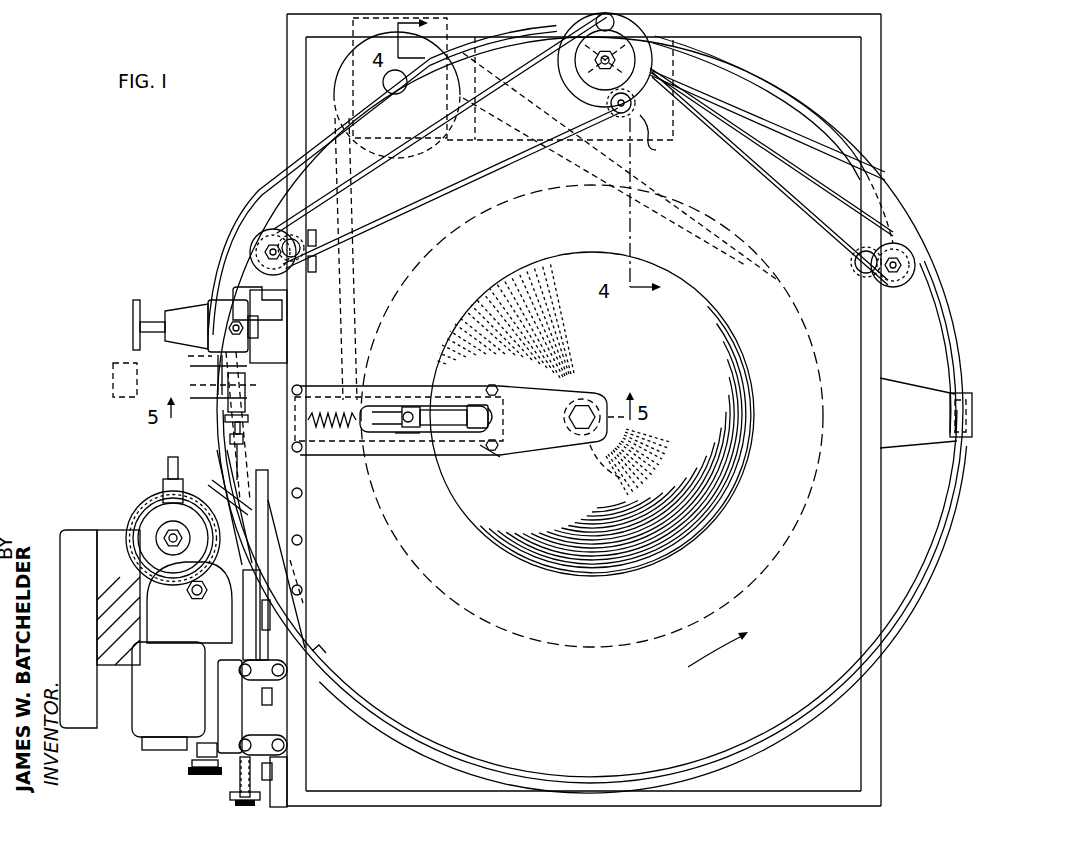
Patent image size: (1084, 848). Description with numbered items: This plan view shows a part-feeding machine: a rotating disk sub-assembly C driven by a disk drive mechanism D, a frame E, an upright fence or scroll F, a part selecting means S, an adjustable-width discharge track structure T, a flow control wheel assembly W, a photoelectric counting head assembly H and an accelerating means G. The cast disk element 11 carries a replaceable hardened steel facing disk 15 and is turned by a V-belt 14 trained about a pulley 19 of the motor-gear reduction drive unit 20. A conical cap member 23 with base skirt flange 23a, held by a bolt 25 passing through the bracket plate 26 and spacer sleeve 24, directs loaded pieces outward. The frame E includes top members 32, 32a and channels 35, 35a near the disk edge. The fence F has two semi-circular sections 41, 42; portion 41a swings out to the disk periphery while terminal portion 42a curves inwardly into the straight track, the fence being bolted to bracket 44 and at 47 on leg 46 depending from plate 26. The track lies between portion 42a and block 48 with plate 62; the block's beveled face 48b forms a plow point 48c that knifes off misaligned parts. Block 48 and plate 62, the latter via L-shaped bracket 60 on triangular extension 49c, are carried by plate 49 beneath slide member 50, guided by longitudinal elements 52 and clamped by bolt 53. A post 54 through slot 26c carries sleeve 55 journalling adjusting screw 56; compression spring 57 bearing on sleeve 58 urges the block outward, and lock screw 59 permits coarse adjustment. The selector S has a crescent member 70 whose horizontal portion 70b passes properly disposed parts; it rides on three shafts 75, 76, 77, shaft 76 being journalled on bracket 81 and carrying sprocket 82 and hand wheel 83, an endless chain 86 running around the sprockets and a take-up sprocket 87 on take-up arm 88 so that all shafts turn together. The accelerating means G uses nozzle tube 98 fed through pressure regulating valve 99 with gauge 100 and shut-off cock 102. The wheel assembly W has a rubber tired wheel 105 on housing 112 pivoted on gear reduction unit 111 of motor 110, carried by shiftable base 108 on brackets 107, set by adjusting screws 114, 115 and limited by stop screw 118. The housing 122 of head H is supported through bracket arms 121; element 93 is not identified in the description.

The main cast disk element 11 is at (925, 523).
The driving V-belt 14 is at (656, 184).
The thin hardened steel disk 15 is at (524, 681).
The pulley 19 is at (333, 95).
The electric motor-gear reduction drive unit 20 is at (485, 118).
The conical cap member 23 is at (470, 516).
The base skirt flange 23a is at (618, 578).
The bracket spacer sleeve 24 is at (591, 452).
The bolt 25 is at (598, 403).
The radially extending bracket plate 26 is at (537, 447).
The second longitudinal slot 26c is at (486, 456).
The horizontal top member 32 is at (306, 743).
The horizontal top member 32a is at (881, 698).
The channel 35 is at (881, 21).
The channel 35a is at (881, 793).
The semi-circular fence section 41 is at (966, 453).
The beginning portion of section 41 41a is at (320, 650).
The semi-circular fence section 42 is at (968, 378).
The terminal portion of fence section 42a is at (195, 368).
The bracket 44 is at (975, 400).
The leg 46 is at (200, 388).
The fence fastening location 47 is at (192, 397).
The vertical plate or block 48 is at (257, 380).
The vertical face 48b is at (240, 385).
The plow point edge 48c is at (212, 356).
The elongated horizontal plate 49 is at (268, 506).
The triangular extension 49c is at (282, 573).
The slide member 50 is at (406, 442).
The longitudinal elements 52 is at (398, 390).
The bolt 53 is at (337, 440).
The vertical post structure 54 is at (416, 406).
The sleeve 55 is at (445, 408).
The knurled headed adjusting screw 56 is at (478, 402).
The helical compression spring 57 is at (350, 440).
The sleeve 58 is at (387, 448).
The lock screw 59 is at (408, 404).
The L-shaped mounting bracket 60 is at (290, 590).
The plate 62 is at (225, 447).
The crescent shaped selector member 70 is at (319, 173).
The horizontal outwardly projecting portion 70b is at (803, 117).
The vertical shaft 75 is at (256, 238).
The vertical shaft 76 is at (645, 36).
The vertical shaft 77 is at (898, 262).
The bracket 81 is at (548, 44).
The sprocket 82 is at (585, 85).
The adjusting hand wheel 83 is at (605, 112).
The endless sprocket chain 86 is at (823, 192).
The take-up sprocket 87 is at (648, 135).
The take-up arm 88 is at (657, 40).
The bracket 93 is at (250, 290).
The compressed air nozzle tube 98 is at (168, 490).
The pressure regulating valve 99 is at (220, 300).
The gauge 100 is at (243, 397).
The shut-off cock 102 is at (190, 416).
The rubber tired wheel 105 is at (122, 508).
The brackets 107 is at (283, 772).
The shiftable base 108 is at (233, 756).
The electric drive motor 110 is at (137, 700).
The gear reduction unit 111 is at (177, 634).
The wheel shaft housing 112 is at (142, 548).
The adjusting screw 114 is at (236, 803).
The adjusting screw 115 is at (194, 770).
The adjustable stop screw 118 is at (262, 520).
The bracket arms 121 is at (148, 750).
The housing of the photoelectric head 122 is at (68, 527).
The rotating disk sub-assembly C is at (956, 506).
The disk drive mechanism D is at (328, 63).
The frame E is at (887, 367).
The scroll or upright fence structure F is at (938, 572).
The accelerating means G is at (168, 302).
The photoelectric counting head assembly H is at (275, 618).
The part selecting or discriminating means S is at (843, 121).
The discharge track structure T is at (228, 463).
The flow control wheel assembly W is at (101, 506).